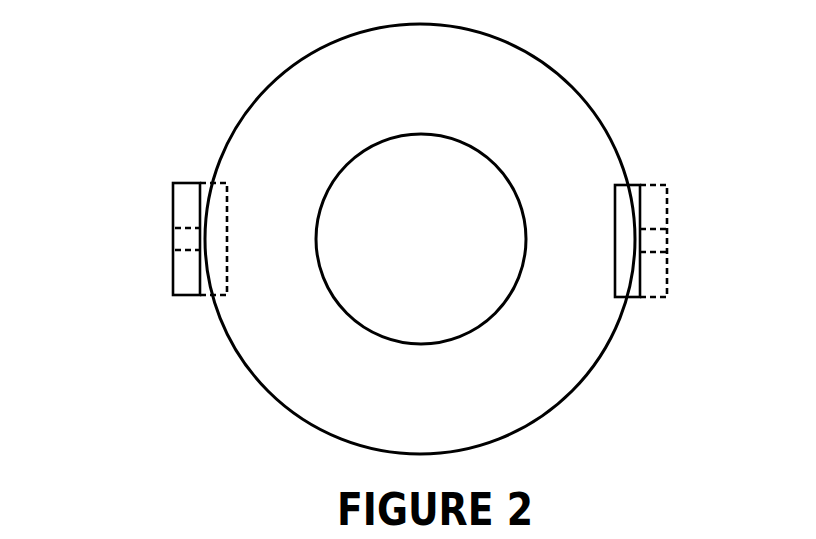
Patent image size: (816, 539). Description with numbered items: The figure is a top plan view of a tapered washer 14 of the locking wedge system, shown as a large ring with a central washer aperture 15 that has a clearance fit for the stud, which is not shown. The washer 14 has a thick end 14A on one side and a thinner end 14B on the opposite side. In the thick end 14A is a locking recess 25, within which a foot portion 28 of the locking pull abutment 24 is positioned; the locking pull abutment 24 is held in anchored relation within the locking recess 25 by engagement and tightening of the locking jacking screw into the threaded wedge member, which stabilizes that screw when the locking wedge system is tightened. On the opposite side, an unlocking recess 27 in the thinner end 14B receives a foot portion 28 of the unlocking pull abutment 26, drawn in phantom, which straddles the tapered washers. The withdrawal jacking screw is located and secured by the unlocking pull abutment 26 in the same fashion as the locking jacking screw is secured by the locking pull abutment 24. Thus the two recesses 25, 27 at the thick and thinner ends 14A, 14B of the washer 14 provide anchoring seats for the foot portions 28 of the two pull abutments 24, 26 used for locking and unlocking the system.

The tapered washer 14 is at (198, 84).
The thick end 14A is at (168, 258).
The thinner end 14B is at (666, 264).
The washer aperture 15 is at (368, 260).
The locking pull abutment 24 is at (173, 183).
The locking recess 25 is at (195, 284).
The unlocking pull abutment 26 is at (667, 297).
The unlocking recess 27 is at (643, 195).
The foot portion 28 is at (217, 207).